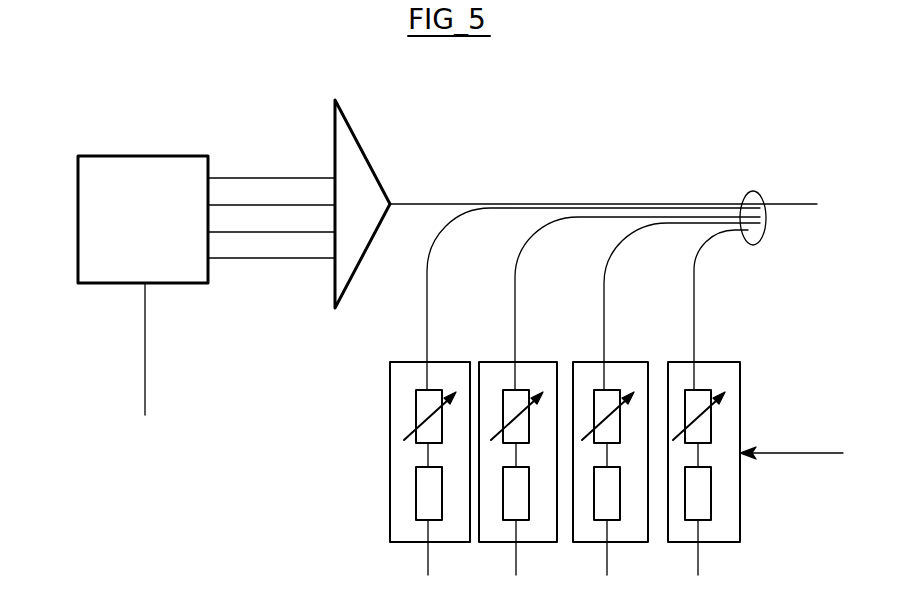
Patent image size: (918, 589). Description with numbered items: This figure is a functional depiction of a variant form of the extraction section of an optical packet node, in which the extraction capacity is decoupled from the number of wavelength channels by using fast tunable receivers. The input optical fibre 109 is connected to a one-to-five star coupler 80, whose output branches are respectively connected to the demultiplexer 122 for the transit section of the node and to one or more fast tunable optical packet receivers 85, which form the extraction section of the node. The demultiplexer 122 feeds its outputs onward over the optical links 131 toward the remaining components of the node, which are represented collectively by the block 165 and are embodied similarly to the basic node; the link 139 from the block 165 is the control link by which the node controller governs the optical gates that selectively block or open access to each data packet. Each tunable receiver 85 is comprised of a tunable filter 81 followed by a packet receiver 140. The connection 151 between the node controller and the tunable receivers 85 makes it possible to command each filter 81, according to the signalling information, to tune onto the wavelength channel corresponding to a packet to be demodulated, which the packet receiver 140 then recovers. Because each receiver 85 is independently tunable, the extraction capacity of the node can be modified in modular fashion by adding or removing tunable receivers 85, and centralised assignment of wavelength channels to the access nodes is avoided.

The block 165 is at (150, 156).
The optical link 131 is at (263, 178).
The demultiplexer 122 is at (355, 128).
The input optical fibre 109 is at (790, 204).
The 1:5 star coupler 80 is at (752, 192).
The link 139 is at (145, 352).
The fast tunable optical packet receiver 85 is at (390, 470).
The tunable filter 81 is at (416, 410).
The packet receiver 140 is at (417, 492).
The connection 151 is at (790, 453).